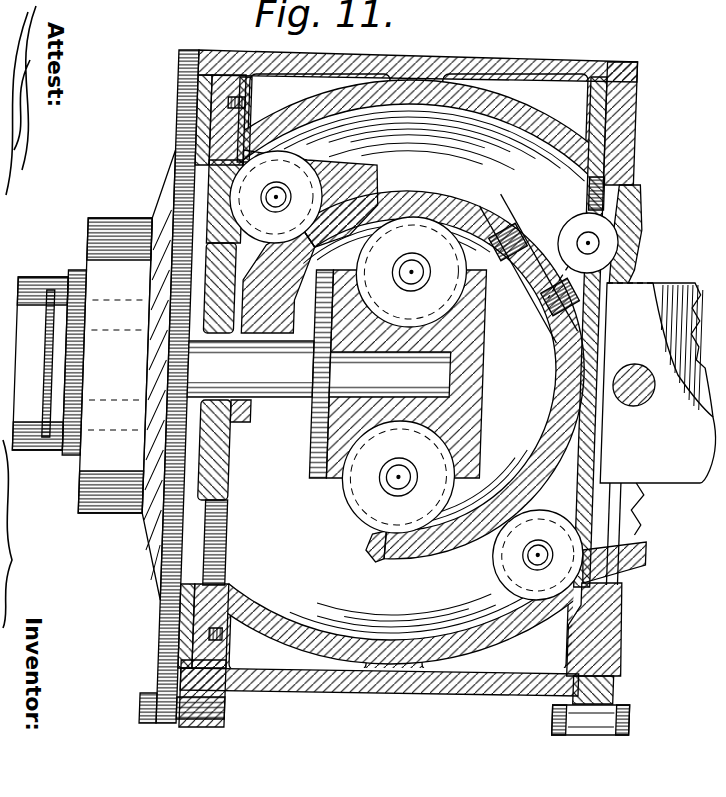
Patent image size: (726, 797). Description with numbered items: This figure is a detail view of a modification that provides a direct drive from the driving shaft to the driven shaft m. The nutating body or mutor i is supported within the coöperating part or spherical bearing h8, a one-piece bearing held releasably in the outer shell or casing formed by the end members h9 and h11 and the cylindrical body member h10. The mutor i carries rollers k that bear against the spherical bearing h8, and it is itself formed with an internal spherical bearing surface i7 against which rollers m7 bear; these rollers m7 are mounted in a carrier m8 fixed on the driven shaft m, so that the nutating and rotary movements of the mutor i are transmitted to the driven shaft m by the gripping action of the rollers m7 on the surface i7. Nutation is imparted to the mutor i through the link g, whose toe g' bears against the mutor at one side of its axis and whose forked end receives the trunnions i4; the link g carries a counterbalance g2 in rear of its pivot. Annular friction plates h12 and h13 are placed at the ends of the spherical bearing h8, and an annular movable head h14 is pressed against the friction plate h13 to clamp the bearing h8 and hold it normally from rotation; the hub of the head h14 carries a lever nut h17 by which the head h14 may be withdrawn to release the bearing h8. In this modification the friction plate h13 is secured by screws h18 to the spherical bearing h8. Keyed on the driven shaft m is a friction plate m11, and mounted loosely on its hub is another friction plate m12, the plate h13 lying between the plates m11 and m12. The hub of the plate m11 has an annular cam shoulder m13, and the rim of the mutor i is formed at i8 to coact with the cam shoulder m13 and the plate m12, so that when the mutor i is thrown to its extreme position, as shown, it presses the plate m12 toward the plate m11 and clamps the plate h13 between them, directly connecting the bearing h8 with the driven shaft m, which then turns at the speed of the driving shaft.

The coöperating part or spherical bearing h8 is at (525, 143).
The cylindrical body member h10 is at (532, 57).
The annular friction plate h12 is at (603, 110).
The annular movable head h14 is at (202, 153).
The annular friction plate h13 is at (237, 133).
The screws h18 is at (219, 103).
The end member or end plate h11 is at (174, 573).
The lever nut h17 is at (43, 248).
The nutating body or mutor i is at (439, 366).
The internal spherical bearing surface i7 is at (552, 442).
The rim formation of the nutating body i8 is at (296, 303).
The rollers k is at (406, 375).
The carrier m8 is at (461, 322).
The rollers m7 is at (405, 375).
The driven shaft m is at (318, 374).
The friction plate m11 is at (206, 308).
The friction plate m12 is at (233, 462).
The annular cam shoulder m13 is at (252, 418).
The end member h9 is at (601, 193).
The toe g' is at (576, 264).
The trunnions i4 is at (595, 243).
The counterbalance g2 is at (659, 409).
The frame a' is at (655, 269).
The link g is at (634, 363).